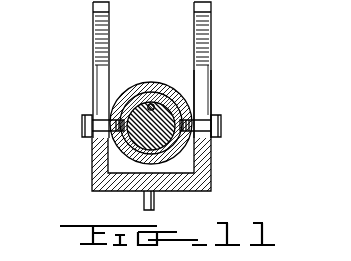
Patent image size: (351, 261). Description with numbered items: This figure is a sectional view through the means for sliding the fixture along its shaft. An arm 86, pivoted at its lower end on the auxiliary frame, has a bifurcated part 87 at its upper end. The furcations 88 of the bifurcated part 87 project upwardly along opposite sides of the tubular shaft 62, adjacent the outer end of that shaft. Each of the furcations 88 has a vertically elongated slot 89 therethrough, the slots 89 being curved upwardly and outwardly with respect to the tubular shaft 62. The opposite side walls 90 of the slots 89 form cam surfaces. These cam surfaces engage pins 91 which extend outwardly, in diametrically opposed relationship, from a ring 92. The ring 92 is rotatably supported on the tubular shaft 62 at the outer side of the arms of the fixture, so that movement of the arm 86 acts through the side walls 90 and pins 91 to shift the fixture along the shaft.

The tubular shaft 62 is at (135, 147).
The arm 86 is at (154, 207).
The bifurcated part 87 is at (212, 182).
The furcations 88 is at (95, 6).
The slots 89 is at (202, 90).
The side walls 90 is at (110, 55).
The pins 91 is at (81, 121).
The ring 92 is at (157, 92).